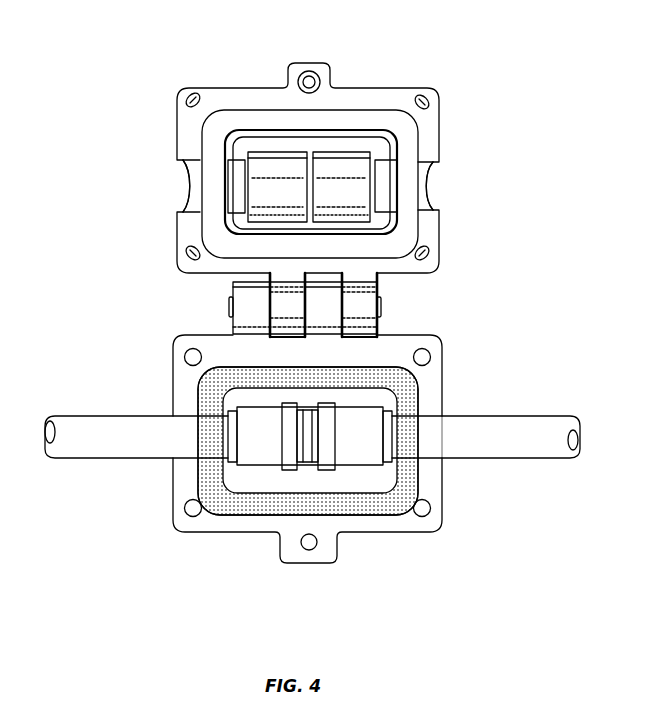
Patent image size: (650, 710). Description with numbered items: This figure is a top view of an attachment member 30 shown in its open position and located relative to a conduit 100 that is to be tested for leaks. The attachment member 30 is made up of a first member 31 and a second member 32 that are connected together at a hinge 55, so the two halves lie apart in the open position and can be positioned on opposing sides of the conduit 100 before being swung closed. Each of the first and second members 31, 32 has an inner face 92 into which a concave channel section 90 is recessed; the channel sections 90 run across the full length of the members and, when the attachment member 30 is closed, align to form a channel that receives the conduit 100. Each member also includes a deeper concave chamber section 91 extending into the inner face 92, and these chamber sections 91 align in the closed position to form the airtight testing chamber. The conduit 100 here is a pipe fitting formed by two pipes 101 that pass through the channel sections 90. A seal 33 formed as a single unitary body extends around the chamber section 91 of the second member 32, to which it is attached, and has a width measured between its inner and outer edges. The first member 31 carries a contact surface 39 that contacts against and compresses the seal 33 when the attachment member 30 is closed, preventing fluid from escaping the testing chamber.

The attachment member 30 is at (568, 178).
The first member 31 is at (358, 87).
The second member 32 is at (418, 533).
The seal 33 is at (377, 377).
The contact surface 39 is at (407, 143).
The hinge 55 is at (200, 310).
The channel section 90 is at (193, 192).
The chamber section 91 is at (268, 145).
The inner face 92 is at (400, 100).
The conduit 100 is at (524, 462).
The pipes 101 is at (113, 430).